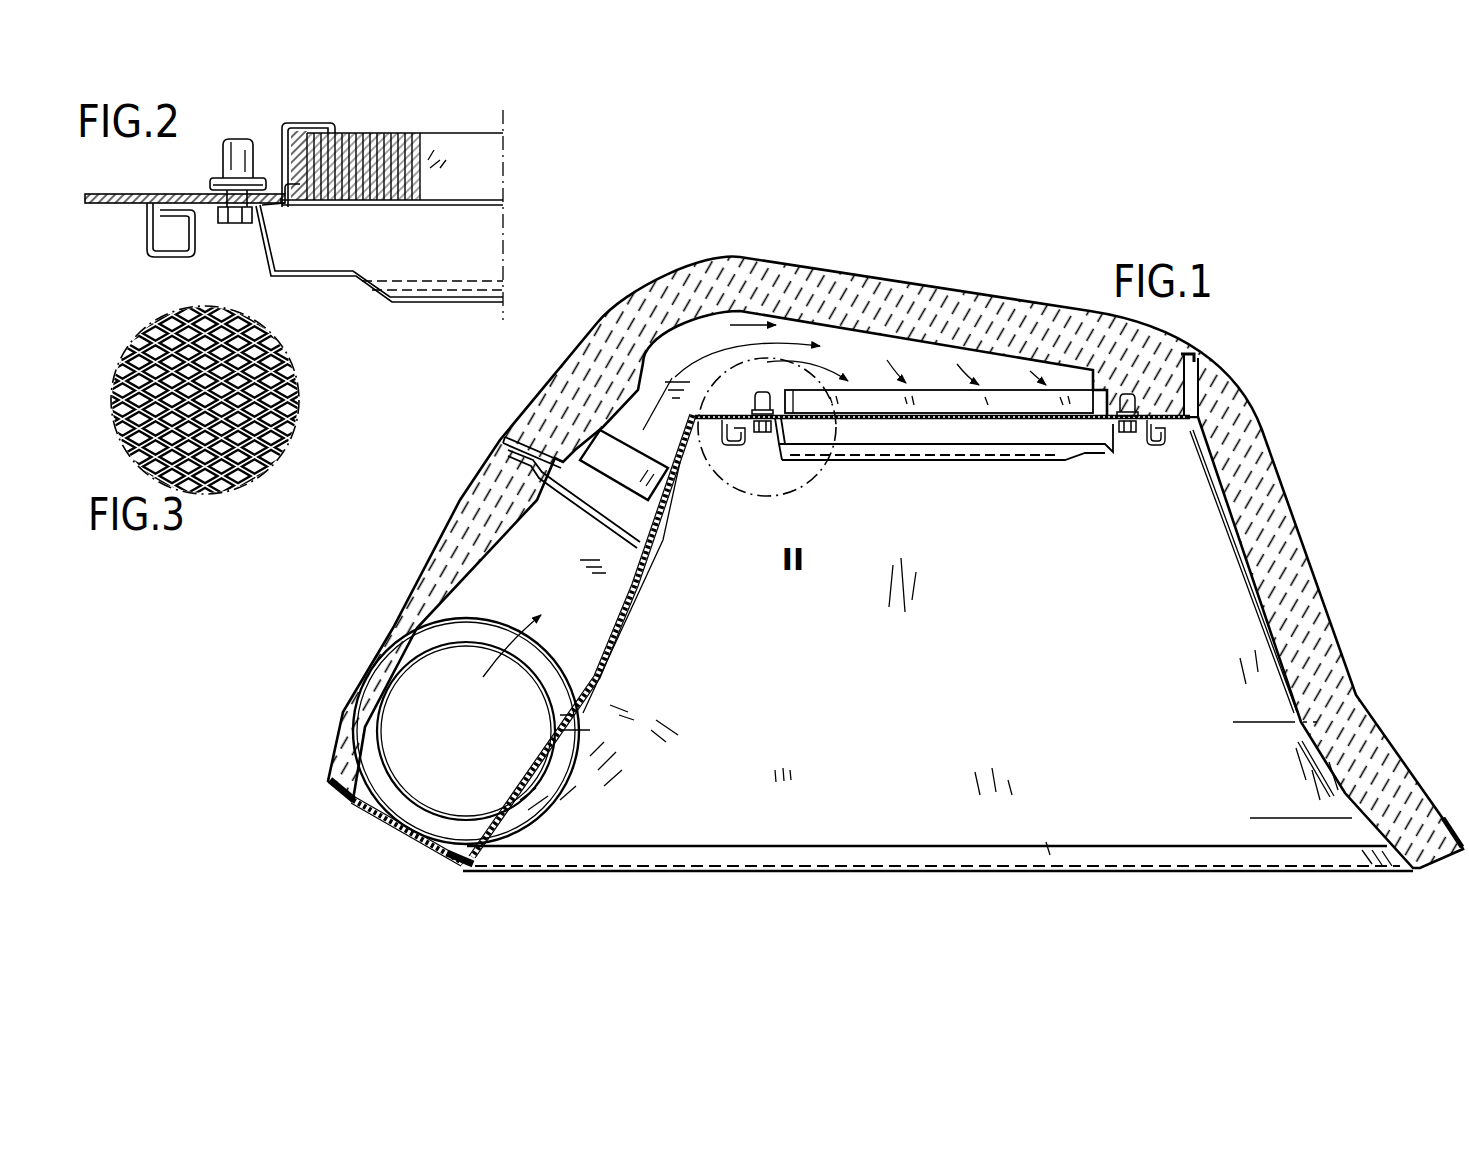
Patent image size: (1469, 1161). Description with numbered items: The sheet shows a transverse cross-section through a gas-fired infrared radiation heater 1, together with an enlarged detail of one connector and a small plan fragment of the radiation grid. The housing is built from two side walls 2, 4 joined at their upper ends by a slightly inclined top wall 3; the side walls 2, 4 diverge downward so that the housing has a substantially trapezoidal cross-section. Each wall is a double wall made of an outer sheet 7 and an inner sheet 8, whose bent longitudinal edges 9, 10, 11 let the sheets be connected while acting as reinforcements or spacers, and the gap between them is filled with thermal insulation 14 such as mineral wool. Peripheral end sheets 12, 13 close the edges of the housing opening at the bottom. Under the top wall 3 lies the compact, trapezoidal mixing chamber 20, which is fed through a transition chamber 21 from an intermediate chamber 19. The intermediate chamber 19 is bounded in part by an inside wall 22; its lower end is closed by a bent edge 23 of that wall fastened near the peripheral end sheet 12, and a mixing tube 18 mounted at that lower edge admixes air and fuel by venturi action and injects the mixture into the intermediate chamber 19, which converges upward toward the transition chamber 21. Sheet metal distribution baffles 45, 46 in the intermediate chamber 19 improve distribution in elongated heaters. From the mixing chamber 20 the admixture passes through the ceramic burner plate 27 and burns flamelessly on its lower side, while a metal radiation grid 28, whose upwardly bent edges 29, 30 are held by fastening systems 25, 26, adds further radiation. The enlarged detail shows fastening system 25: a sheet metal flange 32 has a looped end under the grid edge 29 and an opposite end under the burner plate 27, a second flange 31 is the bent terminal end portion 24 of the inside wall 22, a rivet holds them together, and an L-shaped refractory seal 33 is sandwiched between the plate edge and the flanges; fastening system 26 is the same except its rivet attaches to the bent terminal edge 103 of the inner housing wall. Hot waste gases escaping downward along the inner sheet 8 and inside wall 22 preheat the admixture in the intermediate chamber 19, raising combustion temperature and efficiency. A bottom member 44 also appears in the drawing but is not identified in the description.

In FIG. 1, the radiation heater 1 is at (861, 272).
In FIG. 1, the side wall 2 is at (467, 491).
In FIG. 1, the top wall 3 is at (980, 280).
In FIG. 1, the side wall 4 is at (1302, 497).
In FIG. 1, the outer wall or sheet 7 is at (573, 354).
In FIG. 1, the inner wall or sheet 8 is at (871, 336).
In FIG. 1, the bent longitudinal edge 9 is at (1199, 366).
In FIG. 1, the bent longitudinal edge 10 is at (531, 440).
In FIG. 1, the bent longitudinal edge 11 is at (552, 473).
In FIG. 1, the peripheral end sheet 12 is at (333, 785).
In FIG. 1, the peripheral end sheet 13 is at (1451, 864).
In FIG. 1, the thermal insulation 14 is at (648, 298).
In FIG. 1, the mixing tube 18 is at (546, 690).
In FIG. 1, the intermediate chamber 19 is at (626, 634).
In FIG. 1, the mixing chamber 20 is at (1013, 372).
In FIG. 1, the transition zone or chamber 21 is at (697, 366).
In FIG. 1, the inside wall 22 is at (622, 536).
In FIG. 1, the edge of inside wall 23 is at (458, 872).
In FIG. 1, the bent terminal end portion 24 is at (720, 416).
In FIG. 2, the bent terminal end portion 24 is at (118, 205).
In FIG. 1, the fastening system 25 is at (762, 440).
In FIG. 2, the fastening system 25 is at (231, 228).
In FIG. 1, the fastening system 26 is at (1127, 436).
In FIG. 1, the ceramic burner plate 27 is at (1019, 408).
In FIG. 2, the ceramic burner plate 27 is at (472, 147).
In FIG. 1, the radiation grid 28 is at (971, 462).
In FIG. 2, the radiation grid 28 is at (468, 285).
In FIG. 3, the radiation grid 28 is at (224, 486).
In FIG. 1, the edge of radiation grid 29 is at (804, 449).
In FIG. 2, the edge of radiation grid 29 is at (307, 272).
In FIG. 1, the edge of radiation grid 30 is at (1090, 457).
In FIG. 2, the sheet metal binding or flange 31 is at (283, 137).
In FIG. 2, the sheet metal binding or flange 32 is at (303, 205).
In FIG. 2, the L-shaped refractory seal 33 is at (302, 122).
In FIG. 1, the bottom plate 44 is at (742, 848).
In FIG. 1, the sheet metal distribution baffle 45 is at (666, 486).
In FIG. 1, the sheet metal distribution baffle 46 is at (637, 584).
In FIG. 1, the bent terminal edge 103 is at (1173, 421).